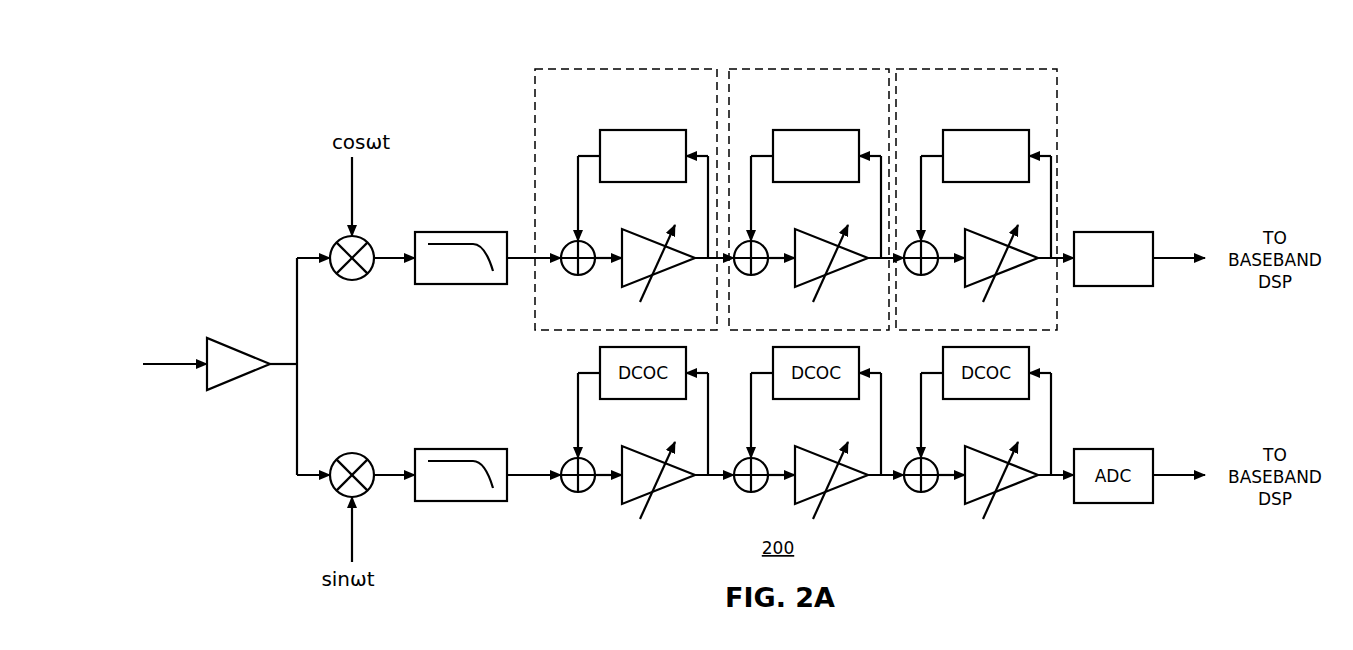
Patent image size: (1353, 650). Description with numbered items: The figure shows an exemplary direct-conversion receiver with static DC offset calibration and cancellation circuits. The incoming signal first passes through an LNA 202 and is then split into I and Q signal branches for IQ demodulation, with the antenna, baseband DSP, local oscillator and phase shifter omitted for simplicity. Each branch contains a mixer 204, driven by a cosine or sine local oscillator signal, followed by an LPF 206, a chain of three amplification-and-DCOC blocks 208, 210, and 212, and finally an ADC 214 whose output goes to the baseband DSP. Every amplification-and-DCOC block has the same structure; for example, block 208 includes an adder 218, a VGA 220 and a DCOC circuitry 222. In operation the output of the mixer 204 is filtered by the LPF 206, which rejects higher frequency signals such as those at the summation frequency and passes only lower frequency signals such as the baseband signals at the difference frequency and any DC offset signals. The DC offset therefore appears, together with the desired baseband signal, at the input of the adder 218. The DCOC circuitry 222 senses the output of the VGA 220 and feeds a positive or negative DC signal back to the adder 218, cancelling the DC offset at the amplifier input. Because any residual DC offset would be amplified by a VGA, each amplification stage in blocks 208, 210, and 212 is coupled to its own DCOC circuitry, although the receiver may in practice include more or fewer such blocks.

The LNA 202 is at (207, 337).
The mixer 204 is at (358, 280).
The LPF 206 is at (427, 232).
The amplification-and-DCOC block 208 is at (634, 177).
The amplification-and-DCOC block 210 is at (773, 69).
The amplification-and-DCOC block 212 is at (928, 69).
The ADC 214 is at (1115, 232).
The adder 218 is at (572, 274).
The VGA 220 is at (623, 233).
The DCOC circuitry 222 is at (617, 130).